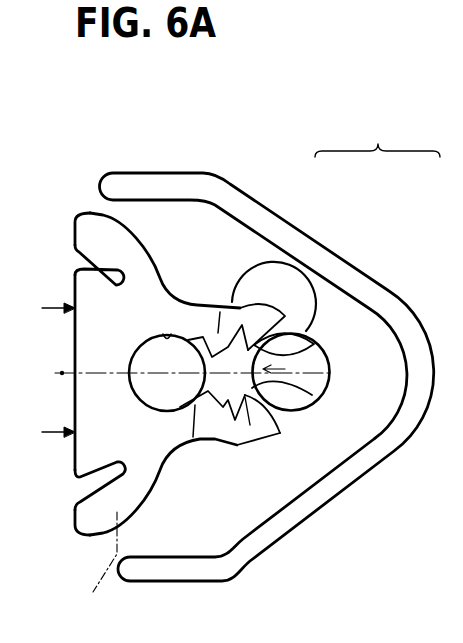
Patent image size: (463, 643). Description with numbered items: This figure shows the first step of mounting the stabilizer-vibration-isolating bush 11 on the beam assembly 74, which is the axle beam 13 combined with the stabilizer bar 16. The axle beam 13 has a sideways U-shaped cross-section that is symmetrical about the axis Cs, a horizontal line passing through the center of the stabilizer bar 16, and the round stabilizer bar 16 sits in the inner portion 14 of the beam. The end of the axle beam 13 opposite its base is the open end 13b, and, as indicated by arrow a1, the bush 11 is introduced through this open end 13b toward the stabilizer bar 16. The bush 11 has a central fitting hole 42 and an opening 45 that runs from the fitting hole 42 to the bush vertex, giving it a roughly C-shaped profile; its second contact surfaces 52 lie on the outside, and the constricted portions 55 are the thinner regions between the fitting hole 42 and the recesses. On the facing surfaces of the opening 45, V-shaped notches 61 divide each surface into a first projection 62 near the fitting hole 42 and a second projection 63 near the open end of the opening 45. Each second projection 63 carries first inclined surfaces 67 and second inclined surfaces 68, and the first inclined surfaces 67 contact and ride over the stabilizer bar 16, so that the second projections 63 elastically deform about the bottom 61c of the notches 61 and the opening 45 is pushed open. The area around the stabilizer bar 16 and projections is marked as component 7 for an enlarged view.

The bush 11 is at (83, 213).
The axle beam 13 is at (321, 244).
The inner portion 14 is at (164, 548).
The stabilizer bar 16 is at (300, 337).
The fitting hole 42 is at (182, 300).
The opening 45 is at (314, 362).
The second contact surfaces 52 is at (146, 238).
The constricted portions 55 is at (450, 460).
The notch 61 is at (232, 306).
The bottom of the notch 61c is at (244, 398).
The first projection 62 is at (212, 345).
The second projection 63 is at (263, 300).
The first inclined surfaces 67 is at (297, 322).
The second inclined surfaces 68 is at (298, 352).
The component 7 is at (280, 283).
The beam assembly 74 is at (377, 137).
The open end 13b is at (87, 565).
The arrow a1 is at (55, 361).
The axis Cs is at (62, 370).